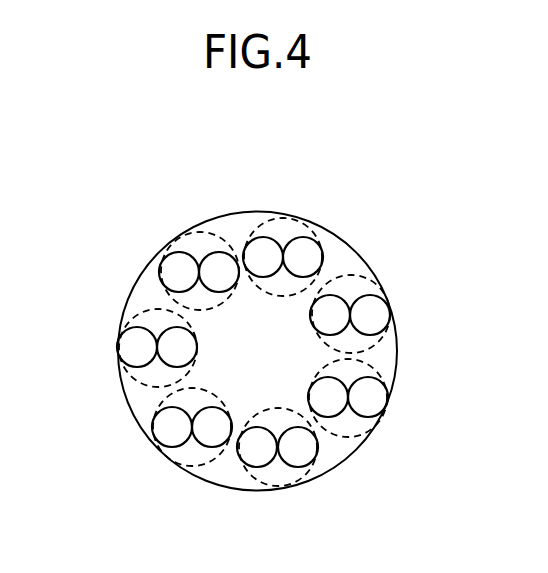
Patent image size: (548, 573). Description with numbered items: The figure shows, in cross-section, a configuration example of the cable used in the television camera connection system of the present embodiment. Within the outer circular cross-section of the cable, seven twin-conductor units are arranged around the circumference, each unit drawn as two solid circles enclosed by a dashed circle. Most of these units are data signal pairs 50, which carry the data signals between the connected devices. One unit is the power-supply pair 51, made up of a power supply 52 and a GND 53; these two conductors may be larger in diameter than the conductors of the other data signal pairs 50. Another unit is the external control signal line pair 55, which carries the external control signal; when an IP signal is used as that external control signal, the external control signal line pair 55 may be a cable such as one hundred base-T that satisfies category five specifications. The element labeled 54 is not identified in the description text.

The data signal pairs 50 is at (258, 342).
The power-supply pair 51 is at (267, 458).
The power supply 52 is at (263, 458).
The GND 53 is at (304, 452).
The outer sheath 54 is at (337, 258).
The external control signal line pair 55 is at (355, 360).